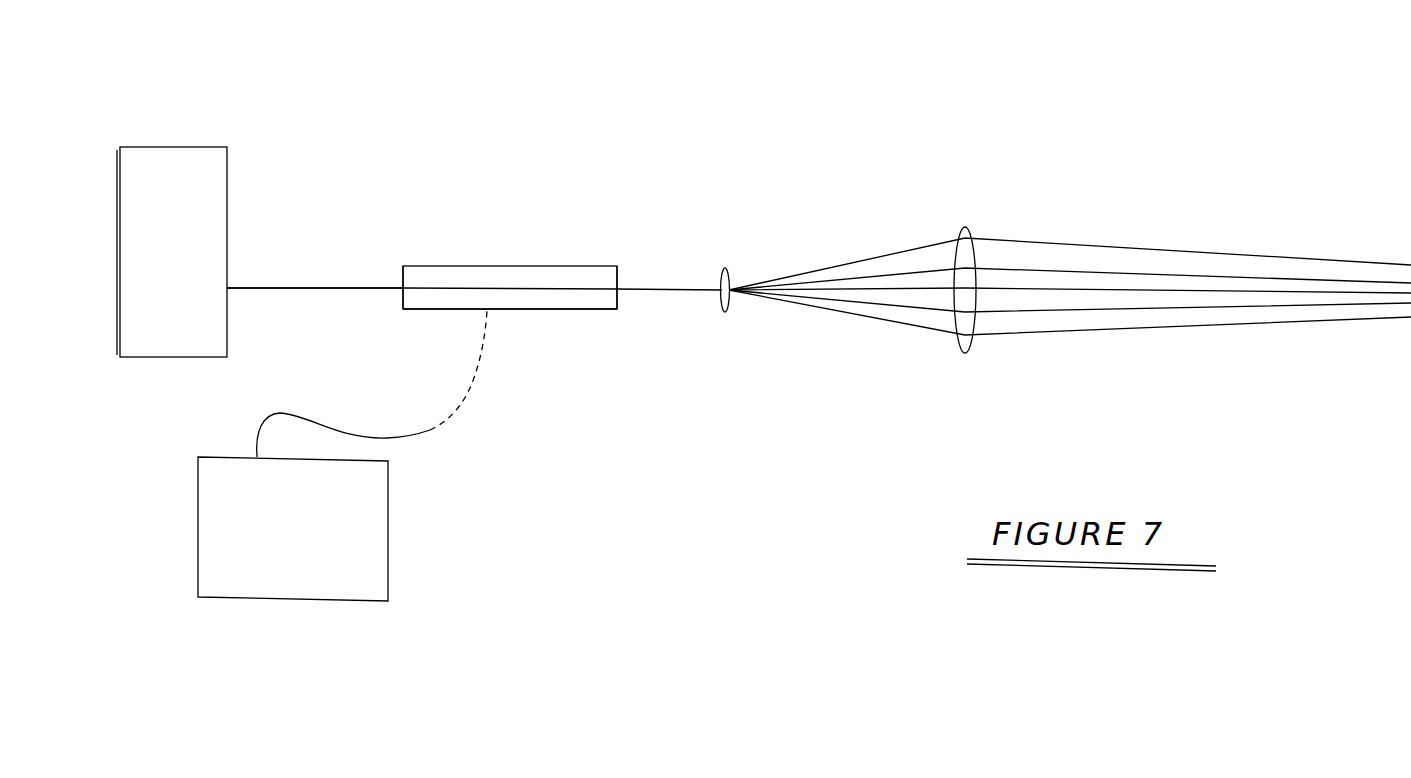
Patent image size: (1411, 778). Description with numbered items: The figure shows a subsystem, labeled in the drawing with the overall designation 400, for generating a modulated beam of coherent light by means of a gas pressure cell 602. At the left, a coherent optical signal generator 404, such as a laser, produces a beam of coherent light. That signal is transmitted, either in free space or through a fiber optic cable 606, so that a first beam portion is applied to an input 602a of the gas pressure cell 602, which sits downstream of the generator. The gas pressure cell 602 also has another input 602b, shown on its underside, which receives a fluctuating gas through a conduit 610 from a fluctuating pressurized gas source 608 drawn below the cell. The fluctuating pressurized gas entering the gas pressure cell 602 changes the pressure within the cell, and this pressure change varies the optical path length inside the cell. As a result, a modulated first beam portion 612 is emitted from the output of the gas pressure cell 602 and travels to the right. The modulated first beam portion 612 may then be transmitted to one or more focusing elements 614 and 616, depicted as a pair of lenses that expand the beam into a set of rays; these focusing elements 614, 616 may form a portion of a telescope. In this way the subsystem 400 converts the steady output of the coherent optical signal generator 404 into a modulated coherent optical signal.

The optical system 400 is at (694, 119).
The coherent optical signal generator 404 is at (200, 338).
The gas pressure cell 602 is at (590, 267).
The input of the gas pressure cell 602a is at (403, 290).
The another input of the gas pressure cell 602b is at (487, 310).
The fiber optic cable 606 is at (275, 289).
The fluctuating pressurized gas source 608 is at (345, 594).
The conduit 610 is at (432, 432).
The modulated first beam portion 612 is at (667, 290).
The focusing mirror 614 is at (727, 272).
The focusing mirror 616 is at (963, 232).